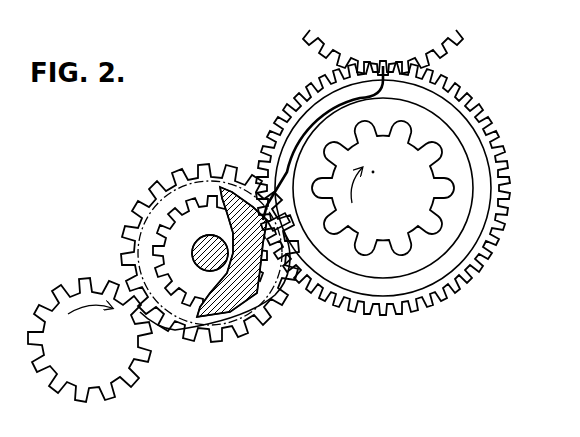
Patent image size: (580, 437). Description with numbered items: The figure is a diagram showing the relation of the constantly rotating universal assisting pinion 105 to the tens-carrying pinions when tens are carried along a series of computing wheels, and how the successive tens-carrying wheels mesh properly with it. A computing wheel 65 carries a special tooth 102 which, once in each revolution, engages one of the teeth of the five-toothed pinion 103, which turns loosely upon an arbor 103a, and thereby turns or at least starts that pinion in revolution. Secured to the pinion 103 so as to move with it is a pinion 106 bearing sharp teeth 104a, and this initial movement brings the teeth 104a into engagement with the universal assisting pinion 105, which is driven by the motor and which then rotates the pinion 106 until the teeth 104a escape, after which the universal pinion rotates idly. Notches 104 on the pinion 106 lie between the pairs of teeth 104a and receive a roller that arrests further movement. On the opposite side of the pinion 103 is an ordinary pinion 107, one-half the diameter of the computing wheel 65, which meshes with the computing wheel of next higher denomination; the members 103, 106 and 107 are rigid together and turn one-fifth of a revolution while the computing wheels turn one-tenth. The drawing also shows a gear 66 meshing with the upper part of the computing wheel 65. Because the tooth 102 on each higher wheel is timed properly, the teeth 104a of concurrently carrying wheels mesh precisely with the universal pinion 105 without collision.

The computing wheel 65 is at (282, 118).
The driving gear 66 is at (305, 34).
The special tooth 102 is at (268, 163).
The five-toothed pinion 103 is at (262, 272).
The arbor 103a is at (209, 242).
The notches 104 is at (150, 231).
The teeth 104a is at (130, 286).
The universal assisting pinion 105 is at (53, 382).
The pinion 106 is at (214, 323).
The ordinary pinion 107 is at (150, 228).